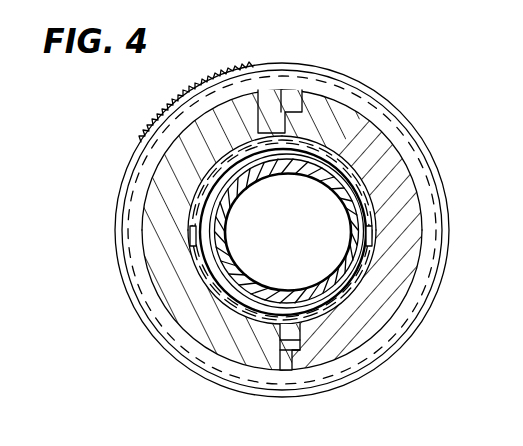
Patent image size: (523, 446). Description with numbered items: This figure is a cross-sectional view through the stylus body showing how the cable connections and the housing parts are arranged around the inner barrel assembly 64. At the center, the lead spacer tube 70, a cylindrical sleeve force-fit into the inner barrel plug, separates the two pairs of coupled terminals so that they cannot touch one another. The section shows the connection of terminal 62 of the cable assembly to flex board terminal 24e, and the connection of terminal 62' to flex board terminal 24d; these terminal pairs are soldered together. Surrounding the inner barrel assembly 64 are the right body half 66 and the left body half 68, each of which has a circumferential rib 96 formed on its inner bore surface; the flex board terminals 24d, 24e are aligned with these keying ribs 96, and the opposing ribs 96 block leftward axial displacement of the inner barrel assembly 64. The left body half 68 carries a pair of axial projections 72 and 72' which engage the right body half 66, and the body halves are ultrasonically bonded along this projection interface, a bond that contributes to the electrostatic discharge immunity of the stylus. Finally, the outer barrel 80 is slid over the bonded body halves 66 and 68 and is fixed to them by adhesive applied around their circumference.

The terminal 24d is at (227, 243).
The terminal 24e is at (360, 241).
The terminal 62 is at (429, 241).
The terminal 62' is at (129, 239).
The inner barrel assembly 64 is at (338, 307).
The right body half 66 is at (369, 132).
The left body half 68 is at (183, 150).
The lead spacer tube 70 is at (245, 300).
The axial projection 72 is at (281, 76).
The axial projection 72' is at (317, 375).
The outer barrel 80 is at (130, 303).
The circumferential rib 96 is at (262, 140).